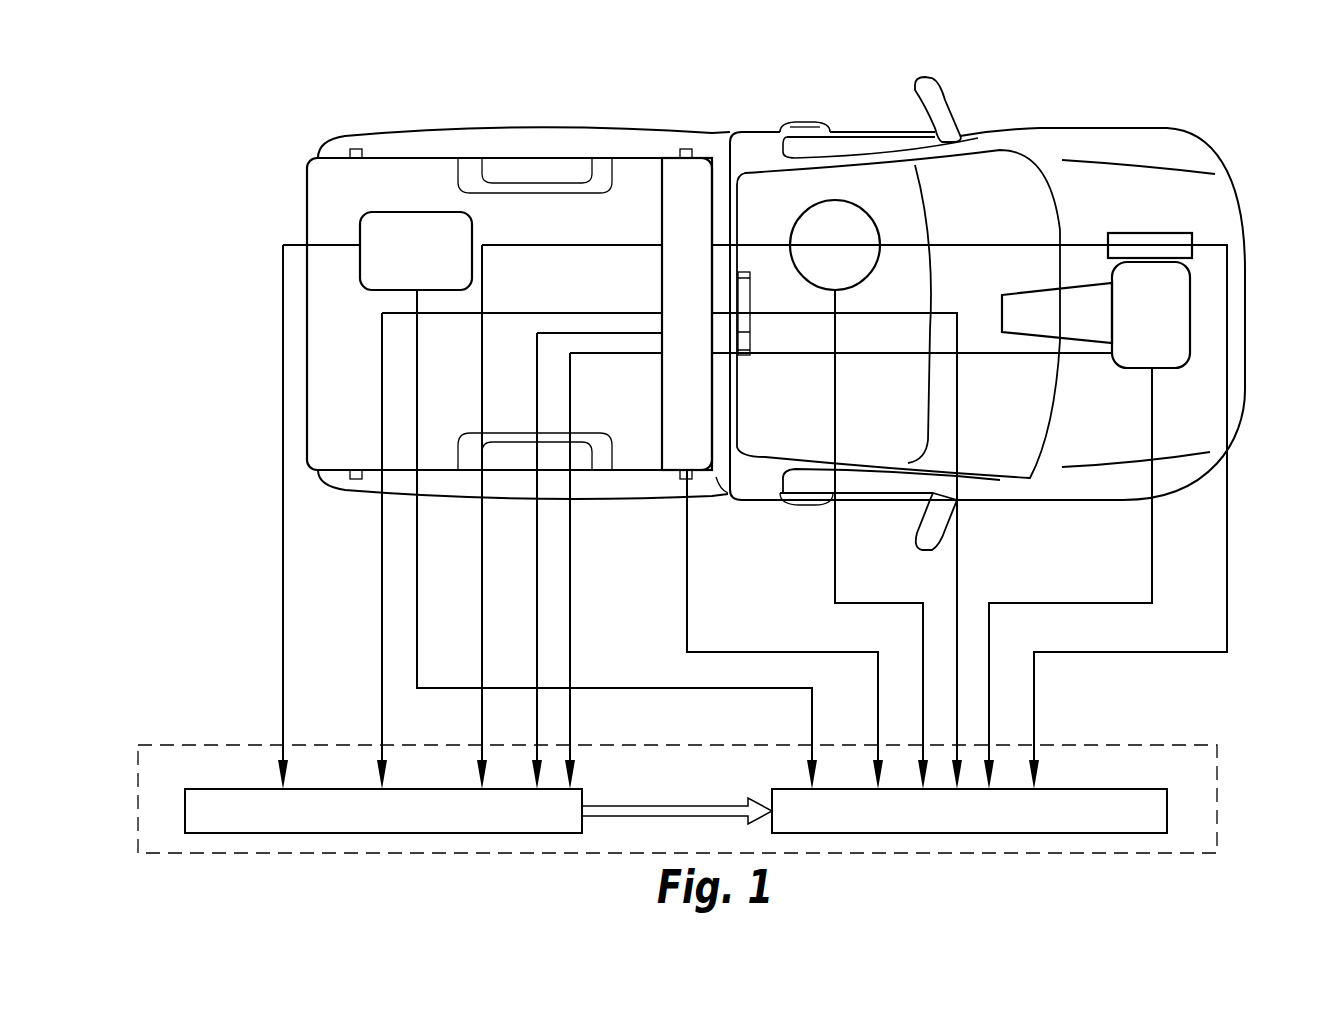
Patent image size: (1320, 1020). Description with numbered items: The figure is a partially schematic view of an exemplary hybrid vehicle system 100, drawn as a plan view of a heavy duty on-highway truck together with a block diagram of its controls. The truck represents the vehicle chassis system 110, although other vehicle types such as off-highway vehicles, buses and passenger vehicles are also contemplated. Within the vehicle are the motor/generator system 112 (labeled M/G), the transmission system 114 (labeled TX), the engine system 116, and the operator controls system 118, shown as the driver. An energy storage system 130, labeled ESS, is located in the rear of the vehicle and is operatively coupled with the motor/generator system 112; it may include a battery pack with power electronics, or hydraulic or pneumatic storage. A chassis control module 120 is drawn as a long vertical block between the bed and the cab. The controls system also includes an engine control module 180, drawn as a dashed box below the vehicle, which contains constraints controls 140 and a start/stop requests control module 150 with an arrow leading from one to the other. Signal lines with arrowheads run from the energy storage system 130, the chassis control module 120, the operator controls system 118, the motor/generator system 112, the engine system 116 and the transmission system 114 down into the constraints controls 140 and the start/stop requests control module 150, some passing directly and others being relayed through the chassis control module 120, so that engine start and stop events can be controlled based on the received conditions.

The hybrid vehicle system 100 is at (283, 103).
The vehicle chassis system 110 is at (1197, 195).
The motor/generator system 112 is at (1122, 233).
The transmission system 114 is at (1062, 290).
The engine system 116 is at (1190, 320).
The operator controls system 118 is at (800, 212).
The chassis control module 120 is at (667, 156).
The energy storage system 130 is at (358, 237).
The constraints controls 140 is at (208, 788).
The start/stop requests control module 150 is at (1137, 789).
The engine control module 180 is at (1202, 745).